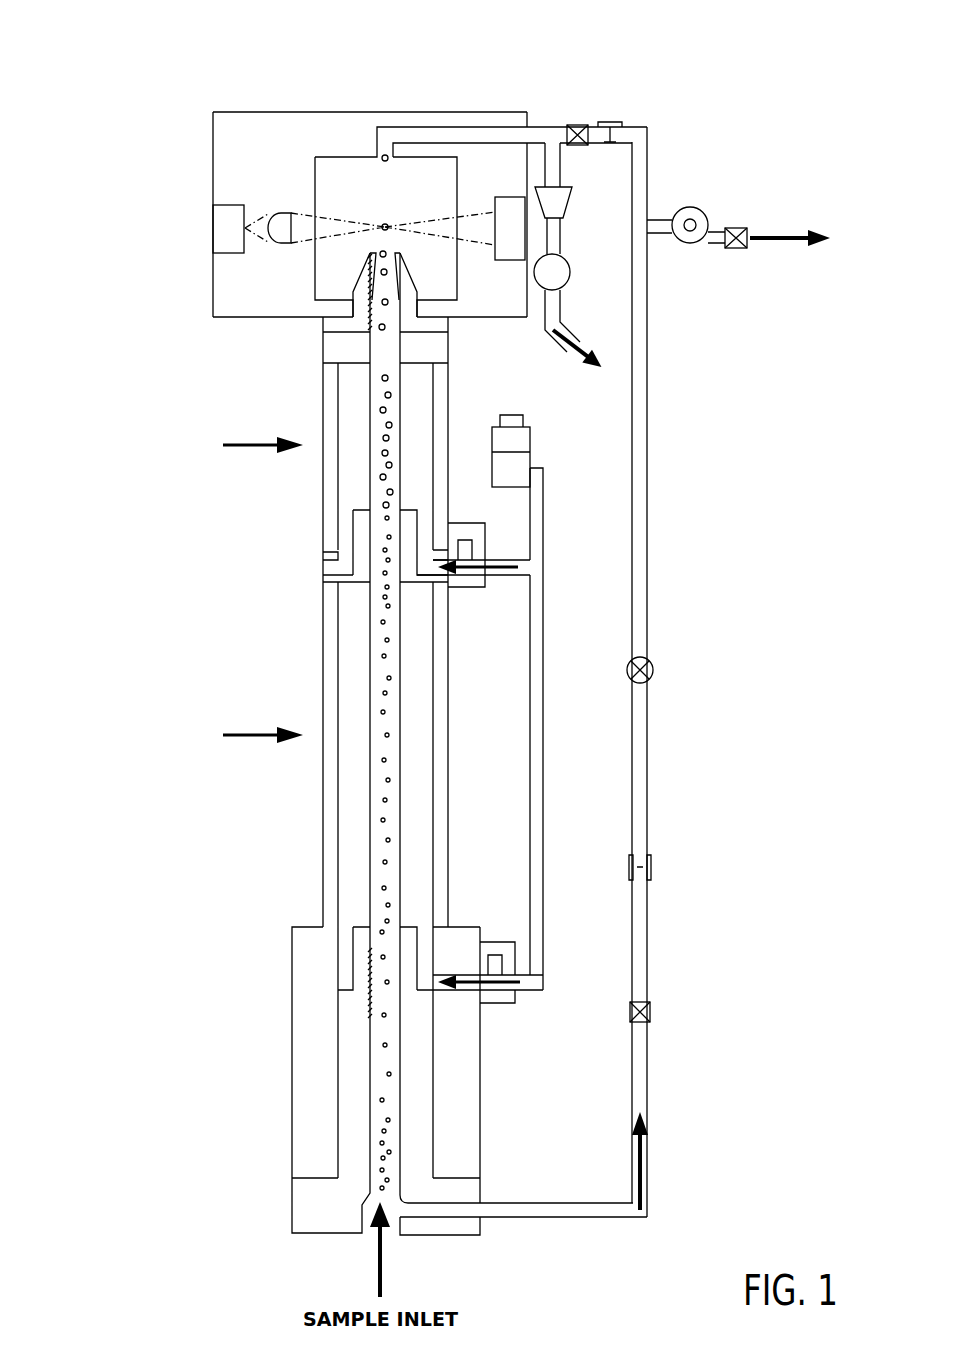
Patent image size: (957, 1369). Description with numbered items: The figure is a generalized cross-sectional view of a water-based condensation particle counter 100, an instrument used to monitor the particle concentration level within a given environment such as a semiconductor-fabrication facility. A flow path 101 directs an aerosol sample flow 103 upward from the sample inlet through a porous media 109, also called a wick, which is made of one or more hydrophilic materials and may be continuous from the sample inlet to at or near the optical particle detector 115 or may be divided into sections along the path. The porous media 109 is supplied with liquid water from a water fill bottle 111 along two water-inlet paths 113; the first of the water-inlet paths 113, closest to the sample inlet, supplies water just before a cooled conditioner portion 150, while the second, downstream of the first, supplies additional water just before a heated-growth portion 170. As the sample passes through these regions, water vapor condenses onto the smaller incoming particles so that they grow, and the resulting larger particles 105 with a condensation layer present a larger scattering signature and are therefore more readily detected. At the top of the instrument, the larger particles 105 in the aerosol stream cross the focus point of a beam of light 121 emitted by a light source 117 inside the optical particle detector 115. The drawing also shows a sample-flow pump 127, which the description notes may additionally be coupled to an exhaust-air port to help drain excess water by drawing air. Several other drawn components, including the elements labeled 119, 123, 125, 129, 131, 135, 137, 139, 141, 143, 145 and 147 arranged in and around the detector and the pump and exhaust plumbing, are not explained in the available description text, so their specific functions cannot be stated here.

The water-based condensation particle counter 100 is at (142, 47).
The flow path 101 is at (383, 1132).
The aerosol sample flow 103 is at (387, 950).
The larger particles 105 is at (385, 378).
The porous media 109 is at (352, 693).
The water fill bottle 111 is at (528, 450).
The water-inlet paths 113 is at (493, 955).
The optical particle detector 115 is at (213, 155).
The light source 117 is at (213, 240).
The lens 119 is at (282, 247).
The beam of light 121 is at (343, 223).
The detector 123 is at (417, 238).
The inner detection chamber 125 is at (510, 197).
The sample-flow pump 127 is at (688, 207).
The valve 129 is at (576, 125).
The pressure sensor 131 is at (620, 122).
The valve 135 is at (650, 1010).
The flow sensor on return duct 137 is at (650, 867).
The valve 139 is at (648, 657).
The exhaust outlet 141 is at (760, 232).
The funnel 143 is at (568, 210).
The liquid trap 145 is at (570, 273).
The waste outlet 147 is at (587, 368).
The cooled conditioner portion 150 is at (244, 736).
The heated-growth portion 170 is at (243, 446).